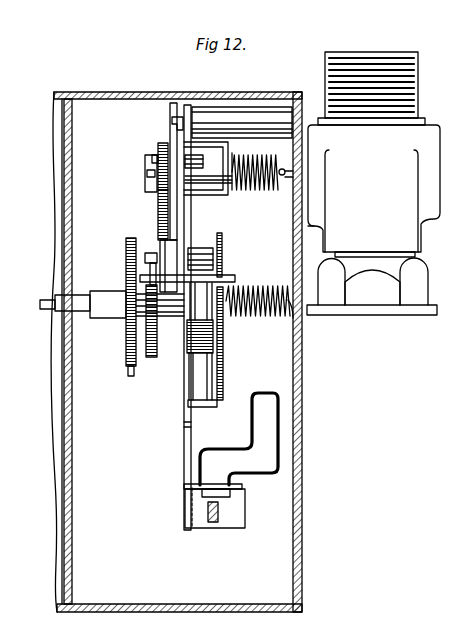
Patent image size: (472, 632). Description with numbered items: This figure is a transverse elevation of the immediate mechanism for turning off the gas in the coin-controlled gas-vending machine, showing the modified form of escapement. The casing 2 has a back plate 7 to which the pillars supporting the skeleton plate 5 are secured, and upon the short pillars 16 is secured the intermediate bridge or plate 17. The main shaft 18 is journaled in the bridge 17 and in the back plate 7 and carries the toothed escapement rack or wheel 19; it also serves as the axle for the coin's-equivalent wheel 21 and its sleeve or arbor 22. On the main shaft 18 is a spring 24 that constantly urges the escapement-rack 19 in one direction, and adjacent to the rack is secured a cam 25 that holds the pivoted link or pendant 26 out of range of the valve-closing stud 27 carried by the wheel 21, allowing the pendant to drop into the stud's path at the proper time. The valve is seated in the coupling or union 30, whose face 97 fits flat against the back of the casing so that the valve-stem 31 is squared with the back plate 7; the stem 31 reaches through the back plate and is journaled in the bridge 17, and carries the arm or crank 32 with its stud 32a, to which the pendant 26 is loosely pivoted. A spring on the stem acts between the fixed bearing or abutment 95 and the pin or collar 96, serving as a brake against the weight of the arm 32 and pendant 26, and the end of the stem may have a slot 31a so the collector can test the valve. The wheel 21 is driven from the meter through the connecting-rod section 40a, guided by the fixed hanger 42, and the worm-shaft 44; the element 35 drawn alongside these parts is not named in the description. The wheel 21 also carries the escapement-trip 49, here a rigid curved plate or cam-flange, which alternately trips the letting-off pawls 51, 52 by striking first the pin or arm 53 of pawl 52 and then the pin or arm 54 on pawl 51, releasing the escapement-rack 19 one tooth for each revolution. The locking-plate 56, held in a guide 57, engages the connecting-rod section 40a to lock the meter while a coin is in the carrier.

The casing 2 is at (178, 352).
The skeleton plate 5 is at (64, 426).
The back plate 7 is at (302, 553).
The short pillars 16 is at (242, 122).
The intermediate bridge or plate 17 is at (184, 452).
The main shaft 18 is at (40, 304).
The toothed escapement rack or wheel 19 is at (212, 185).
The coin's-equivalent wheel 21 is at (133, 315).
The sleeve or arbor 22 is at (55, 313).
The spring 24 is at (268, 311).
The cam 25 is at (223, 257).
The pivoted link or pendant 26 is at (158, 218).
The valve-closing stud 27 is at (145, 258).
The coupling or union 30 is at (373, 183).
The valve-stem 31 is at (150, 152).
The slot 31a is at (141, 171).
The arm or crank 32 is at (168, 138).
The stud 32a is at (196, 170).
The rod 35 is at (128, 282).
The outer section of the connecting-rod 40a is at (207, 528).
The fixed hanger 42 is at (228, 508).
The worm-shaft 44 is at (255, 163).
The escapement-trip 49 is at (176, 246).
The letting-off pawl 51 is at (210, 370).
The letting-off pawl 52 is at (190, 374).
The pin or arm 53 is at (187, 343).
The pin or arm 54 is at (215, 330).
The locking-plate 56 is at (252, 430).
The guide 57 is at (242, 487).
The fixed bearing or abutment 95 is at (241, 160).
The pin or collar 96 is at (282, 176).
The face 97 is at (308, 240).